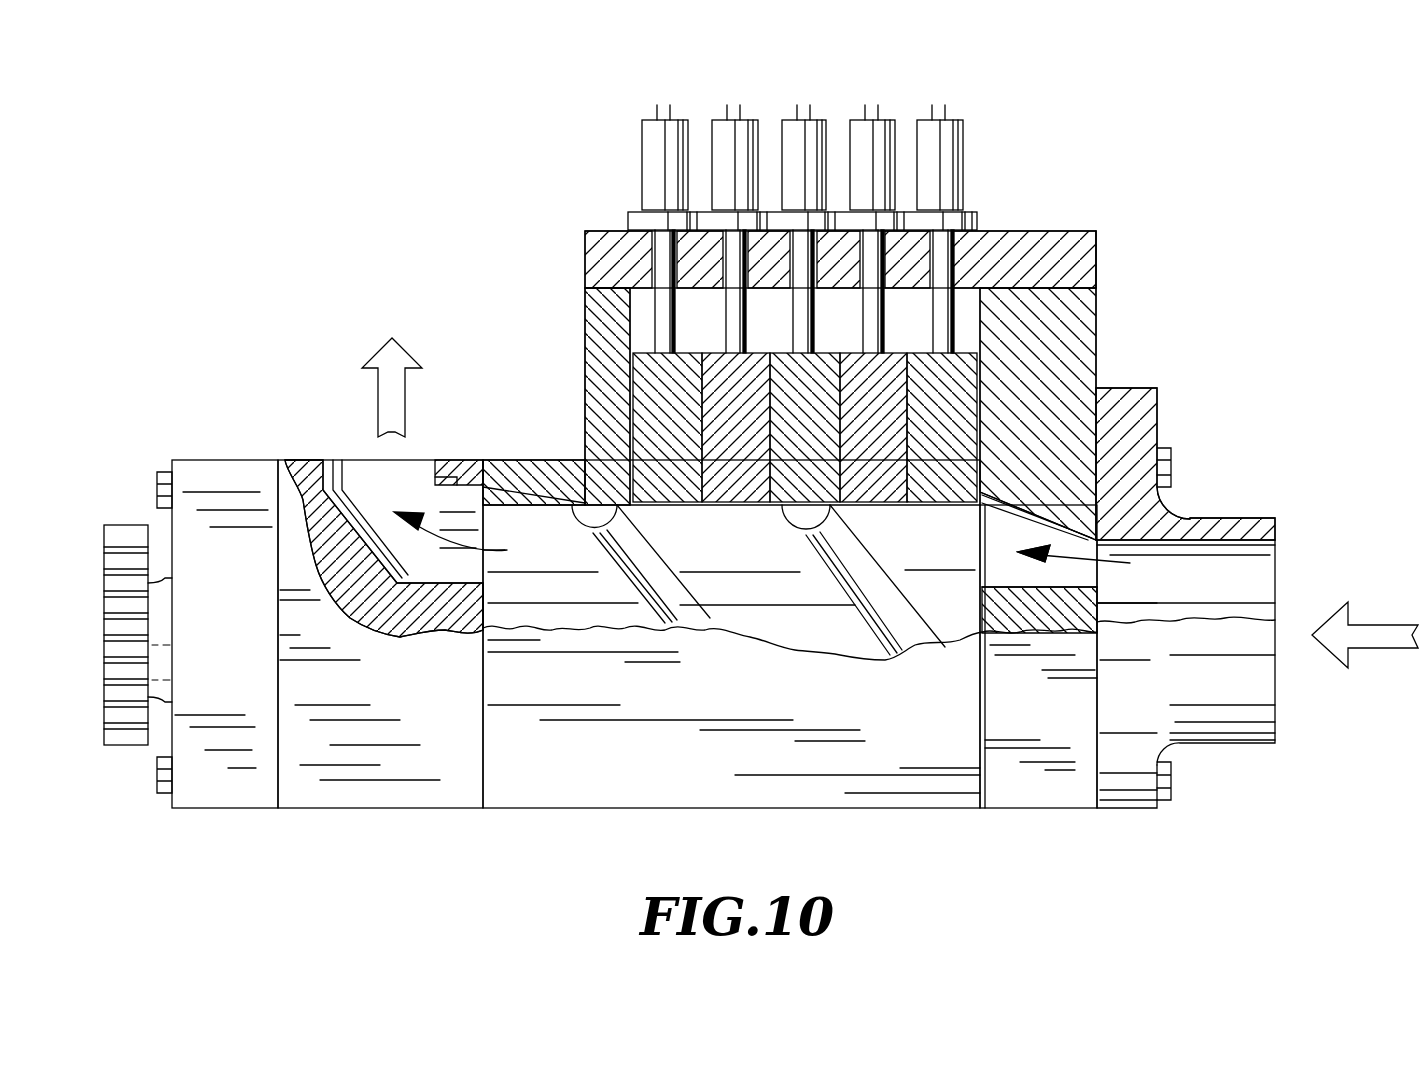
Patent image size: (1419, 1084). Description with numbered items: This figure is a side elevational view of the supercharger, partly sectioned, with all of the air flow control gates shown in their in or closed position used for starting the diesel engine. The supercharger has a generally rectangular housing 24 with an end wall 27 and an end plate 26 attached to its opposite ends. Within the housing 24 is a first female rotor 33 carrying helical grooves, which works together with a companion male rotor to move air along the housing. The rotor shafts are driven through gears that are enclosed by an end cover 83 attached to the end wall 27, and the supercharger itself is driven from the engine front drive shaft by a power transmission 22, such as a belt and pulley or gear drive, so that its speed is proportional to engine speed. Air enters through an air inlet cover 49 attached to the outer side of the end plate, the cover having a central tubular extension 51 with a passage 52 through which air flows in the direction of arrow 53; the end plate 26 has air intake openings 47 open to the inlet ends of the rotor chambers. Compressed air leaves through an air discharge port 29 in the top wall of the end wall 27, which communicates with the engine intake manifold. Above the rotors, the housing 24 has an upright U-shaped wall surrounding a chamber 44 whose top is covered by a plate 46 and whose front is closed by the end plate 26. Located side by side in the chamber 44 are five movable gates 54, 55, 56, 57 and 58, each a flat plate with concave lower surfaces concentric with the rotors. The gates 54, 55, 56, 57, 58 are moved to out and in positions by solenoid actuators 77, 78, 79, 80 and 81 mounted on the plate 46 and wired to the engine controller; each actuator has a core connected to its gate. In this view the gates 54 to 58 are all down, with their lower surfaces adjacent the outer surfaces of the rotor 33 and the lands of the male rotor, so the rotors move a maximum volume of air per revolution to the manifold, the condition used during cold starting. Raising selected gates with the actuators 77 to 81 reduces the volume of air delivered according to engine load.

The power transmission 22 is at (127, 742).
The housing 24 is at (710, 793).
The end plate 26 is at (1042, 790).
The end wall 27 is at (383, 793).
The air discharge port 29 is at (355, 478).
The first female rotor 33 is at (788, 612).
The chamber 44 is at (966, 305).
The plate 46 is at (1077, 267).
The air intake openings 47 is at (1000, 538).
The air inlet cover 49 is at (1150, 414).
The central tubular extension 51 is at (1222, 518).
The passage 52 is at (1245, 575).
The arrow 53 is at (1375, 650).
The gate 54 is at (648, 388).
The gate 55 is at (712, 355).
The gate 56 is at (783, 357).
The gate 57 is at (852, 362).
The gate 58 is at (980, 380).
The solenoid actuator 77 is at (643, 167).
The solenoid actuator 78 is at (712, 135).
The solenoid actuator 79 is at (782, 138).
The solenoid actuator 80 is at (850, 140).
The solenoid actuator 81 is at (917, 140).
The end cover 83 is at (220, 793).